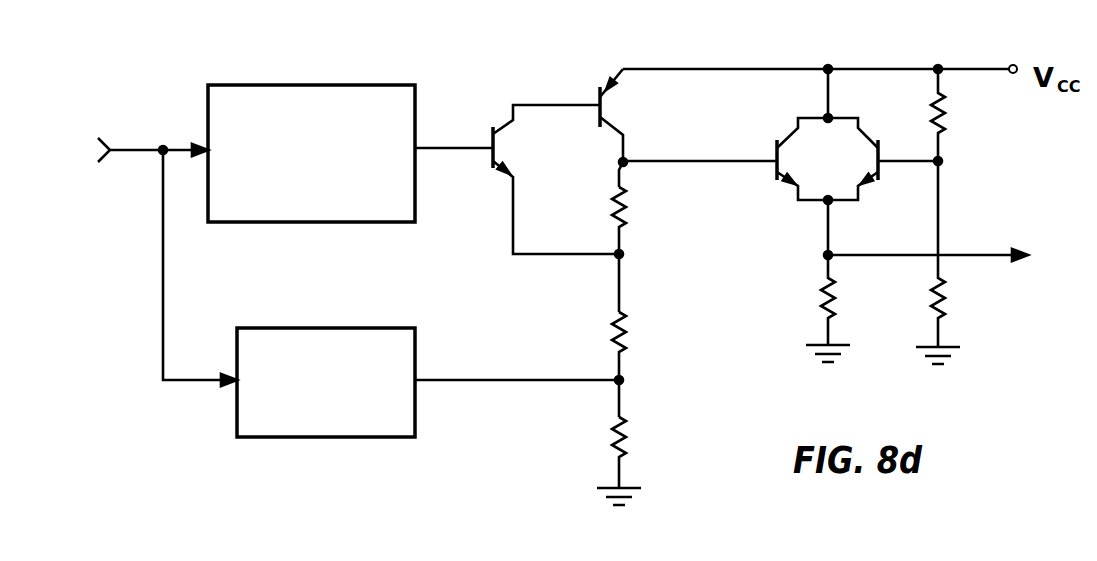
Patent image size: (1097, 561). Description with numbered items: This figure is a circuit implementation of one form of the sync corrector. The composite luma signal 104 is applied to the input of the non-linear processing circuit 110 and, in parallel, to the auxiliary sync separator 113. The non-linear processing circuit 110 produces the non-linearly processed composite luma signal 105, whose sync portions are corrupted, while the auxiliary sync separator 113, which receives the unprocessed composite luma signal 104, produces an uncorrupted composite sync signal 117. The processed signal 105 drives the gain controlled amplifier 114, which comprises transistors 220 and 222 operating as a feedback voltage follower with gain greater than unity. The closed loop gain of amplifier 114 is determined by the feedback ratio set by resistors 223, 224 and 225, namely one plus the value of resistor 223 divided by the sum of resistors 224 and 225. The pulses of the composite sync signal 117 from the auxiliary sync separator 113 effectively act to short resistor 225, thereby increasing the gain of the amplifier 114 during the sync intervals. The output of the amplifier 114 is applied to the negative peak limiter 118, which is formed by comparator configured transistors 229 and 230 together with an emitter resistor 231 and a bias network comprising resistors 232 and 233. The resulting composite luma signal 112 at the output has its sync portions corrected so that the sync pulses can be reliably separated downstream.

The composite luma signal 104 is at (167, 234).
The non-linear processing circuit 110 is at (311, 128).
The non-linearly processed composite luma signal 105 is at (454, 117).
The auxiliary sync separator 113 is at (326, 357).
The uncorrupted composite sync signal 117 is at (517, 423).
The transistor 220 is at (556, 179).
The transistor 222 is at (638, 117).
The resistor 223 is at (662, 249).
The resistor 224 is at (570, 364).
The resistor 225 is at (582, 461).
The transistor 229 is at (774, 154).
The transistor 230 is at (883, 180).
The emitter resistor 231 is at (791, 308).
The resistor 232 is at (972, 115).
The resistor 233 is at (968, 262).
The gain controlled amplifier 114 is at (711, 281).
The negative peak limiter 118 is at (1011, 185).
The composite luma signal 112 is at (958, 242).